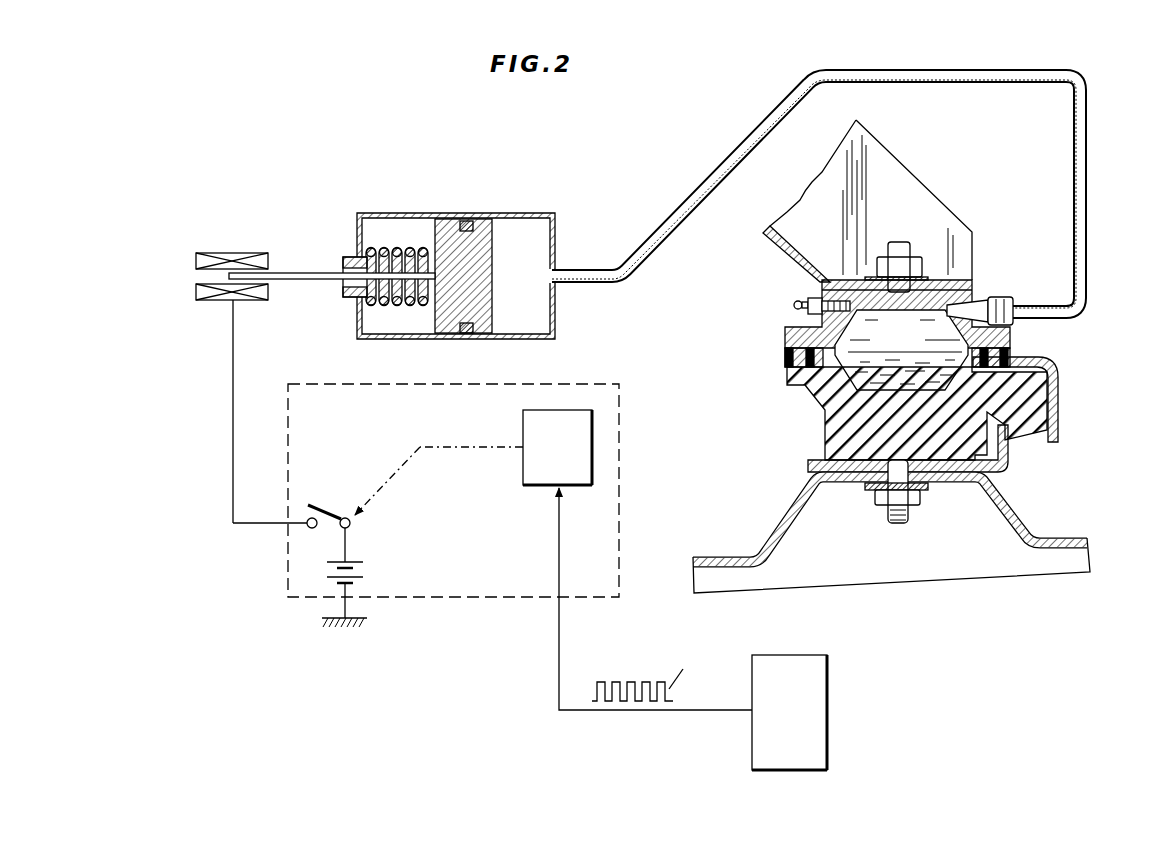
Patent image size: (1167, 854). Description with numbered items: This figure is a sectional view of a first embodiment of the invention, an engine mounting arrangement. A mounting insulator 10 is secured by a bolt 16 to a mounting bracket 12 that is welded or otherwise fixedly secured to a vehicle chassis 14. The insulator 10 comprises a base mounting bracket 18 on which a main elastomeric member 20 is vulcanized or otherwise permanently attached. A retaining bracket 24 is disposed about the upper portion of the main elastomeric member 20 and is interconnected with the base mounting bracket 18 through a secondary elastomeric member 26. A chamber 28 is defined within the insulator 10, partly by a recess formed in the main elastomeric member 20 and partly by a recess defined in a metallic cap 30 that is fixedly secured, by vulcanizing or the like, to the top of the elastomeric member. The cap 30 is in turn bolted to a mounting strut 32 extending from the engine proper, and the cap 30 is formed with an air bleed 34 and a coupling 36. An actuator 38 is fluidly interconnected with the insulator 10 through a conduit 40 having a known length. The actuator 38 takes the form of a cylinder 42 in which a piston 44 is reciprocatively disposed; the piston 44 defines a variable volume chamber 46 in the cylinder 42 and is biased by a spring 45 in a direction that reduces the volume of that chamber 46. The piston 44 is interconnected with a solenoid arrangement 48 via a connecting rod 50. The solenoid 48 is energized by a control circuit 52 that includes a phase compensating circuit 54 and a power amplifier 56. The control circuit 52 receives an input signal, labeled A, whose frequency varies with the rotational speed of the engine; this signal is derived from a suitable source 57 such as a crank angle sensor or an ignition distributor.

The mounting insulator 10 is at (926, 356).
The mounting bracket 12 is at (1000, 516).
The vehicle chassis 14 is at (1086, 566).
The bolt 16 is at (887, 513).
The base mounting bracket 18 is at (812, 464).
The main elastomeric member 20 is at (815, 396).
The retaining bracket 24 is at (787, 353).
The secondary elastomeric member 26 is at (1040, 440).
The chamber 28 is at (901, 350).
The metallic cap 30 is at (787, 337).
The mounting strut 32 is at (780, 247).
The air bleed 34 is at (794, 305).
The coupling 36 is at (988, 300).
The actuator 38 is at (379, 203).
The conduit 40 is at (668, 223).
The cylinder 42 is at (467, 220).
The piston 44 is at (483, 240).
The spring 45 is at (372, 305).
The variable volume chamber 46 is at (533, 288).
The solenoid arrangement 48 is at (208, 244).
The connecting rod 50 is at (302, 272).
The control circuit 52 is at (426, 524).
The phase compensating circuit 54 is at (523, 418).
The power amplifier 56 is at (356, 529).
The source 57 is at (827, 709).